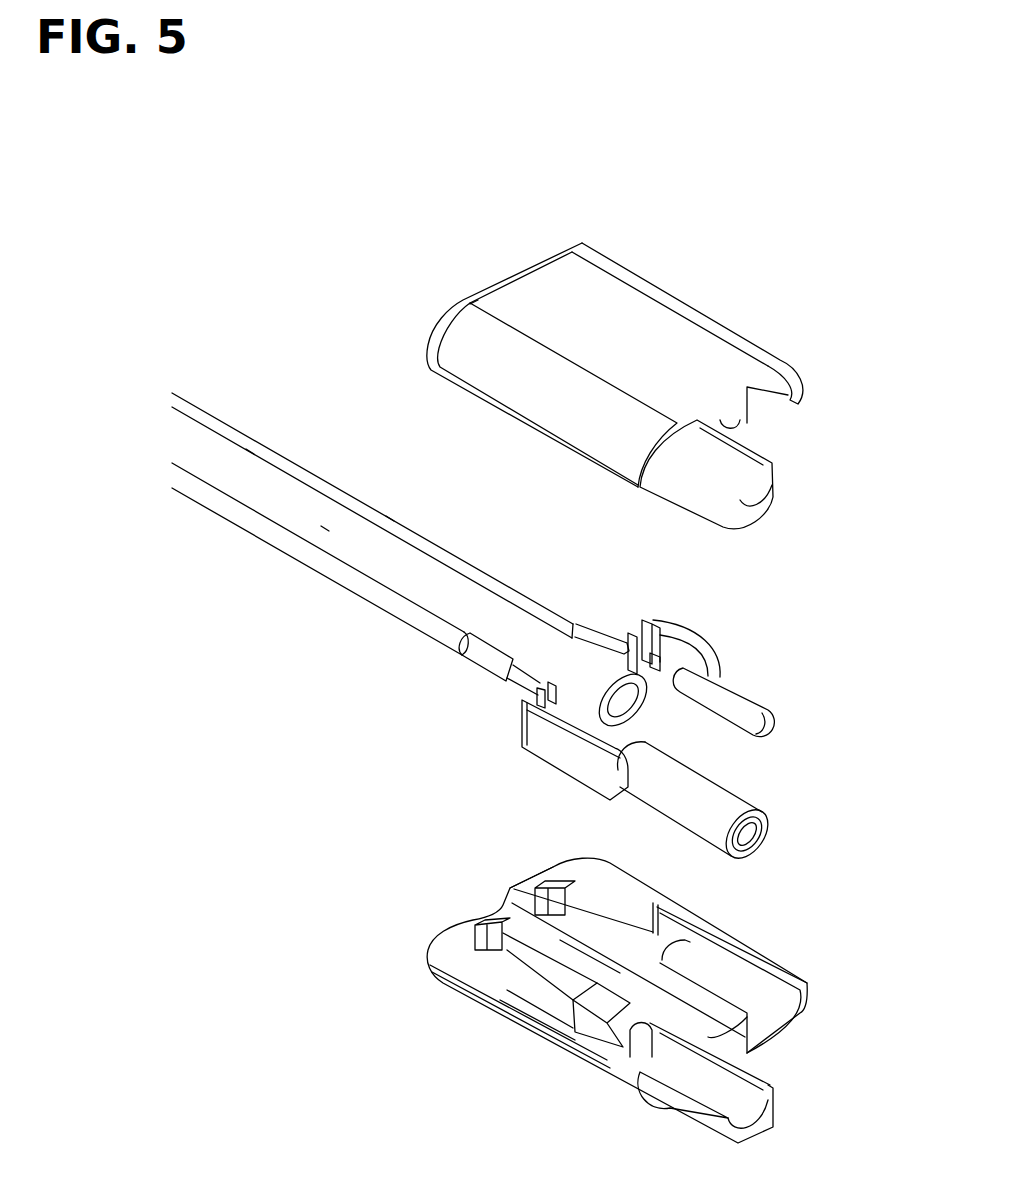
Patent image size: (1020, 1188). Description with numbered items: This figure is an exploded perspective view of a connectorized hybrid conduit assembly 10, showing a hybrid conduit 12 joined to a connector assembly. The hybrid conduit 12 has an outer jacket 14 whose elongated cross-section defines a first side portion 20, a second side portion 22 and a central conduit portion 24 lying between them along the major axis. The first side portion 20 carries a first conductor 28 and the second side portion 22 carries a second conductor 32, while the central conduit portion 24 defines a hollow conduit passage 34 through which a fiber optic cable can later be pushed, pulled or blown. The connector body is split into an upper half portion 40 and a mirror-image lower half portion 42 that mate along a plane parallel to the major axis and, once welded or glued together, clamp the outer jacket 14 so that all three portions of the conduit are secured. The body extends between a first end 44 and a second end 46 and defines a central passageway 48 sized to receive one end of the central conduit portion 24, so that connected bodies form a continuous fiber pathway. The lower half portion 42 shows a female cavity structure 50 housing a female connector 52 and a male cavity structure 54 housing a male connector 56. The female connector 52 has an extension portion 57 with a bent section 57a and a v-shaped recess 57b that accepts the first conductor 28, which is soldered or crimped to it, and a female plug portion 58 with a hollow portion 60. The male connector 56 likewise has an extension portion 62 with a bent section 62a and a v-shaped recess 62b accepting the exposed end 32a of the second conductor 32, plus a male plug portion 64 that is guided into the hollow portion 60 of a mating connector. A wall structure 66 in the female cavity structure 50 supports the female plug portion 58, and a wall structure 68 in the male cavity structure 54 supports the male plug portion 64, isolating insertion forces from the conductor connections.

The connectorized hybrid conduit assembly 10 is at (828, 240).
The hybrid conduit 12 is at (200, 430).
The outer jacket 14 is at (250, 452).
The first side portion 20 is at (390, 600).
The second side portion 22 is at (390, 527).
The central conduit portion 24 is at (325, 527).
The first conductor 28 is at (508, 686).
The second conductor 32 is at (592, 630).
The exposed end 32a is at (657, 655).
The hollow conduit passage 34 is at (620, 698).
The upper half portion 40 is at (700, 315).
The lower half portion 42 is at (515, 1020).
The first end 44 is at (492, 282).
The second end 46 is at (747, 425).
The central passageway 48 is at (535, 932).
The female cavity structure 50 is at (528, 983).
The female connector 52 is at (588, 788).
The male cavity structure 54 is at (628, 945).
The male connector 56 is at (765, 692).
The extension portion 57 is at (567, 745).
The bent section 57a is at (550, 690).
The v-shaped recess 57b is at (538, 692).
The female plug portion 58 is at (718, 810).
The hollow portion 60 is at (747, 828).
The extension portion 62 is at (673, 653).
The bent section 62a is at (642, 635).
The v-shaped recess 62b is at (633, 637).
The male plug portion 64 is at (725, 700).
The wall structure 66 is at (637, 1038).
The wall structure 68 is at (683, 958).